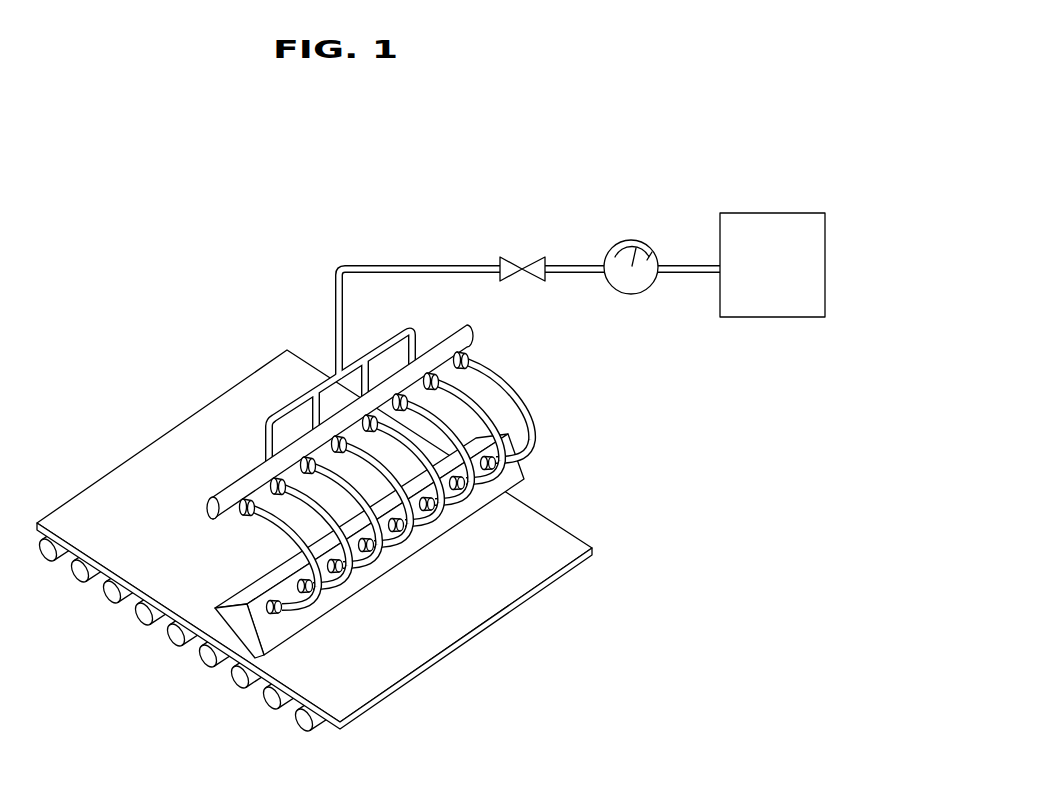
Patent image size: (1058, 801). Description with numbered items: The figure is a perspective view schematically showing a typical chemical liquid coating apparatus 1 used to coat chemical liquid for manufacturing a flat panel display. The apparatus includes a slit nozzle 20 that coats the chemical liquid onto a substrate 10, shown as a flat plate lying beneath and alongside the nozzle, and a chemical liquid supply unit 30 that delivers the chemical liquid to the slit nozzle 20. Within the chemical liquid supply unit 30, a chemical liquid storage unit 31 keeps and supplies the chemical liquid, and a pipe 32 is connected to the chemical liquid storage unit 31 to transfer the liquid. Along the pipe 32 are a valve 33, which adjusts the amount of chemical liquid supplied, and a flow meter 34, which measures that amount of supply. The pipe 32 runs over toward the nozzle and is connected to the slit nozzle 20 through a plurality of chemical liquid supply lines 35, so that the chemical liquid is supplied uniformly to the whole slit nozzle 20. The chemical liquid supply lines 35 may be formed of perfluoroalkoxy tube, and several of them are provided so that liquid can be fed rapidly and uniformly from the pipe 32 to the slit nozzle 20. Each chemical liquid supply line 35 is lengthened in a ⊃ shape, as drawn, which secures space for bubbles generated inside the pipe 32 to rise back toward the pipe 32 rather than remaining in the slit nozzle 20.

The chemical liquid coating apparatus 1 is at (190, 288).
The substrate 10 is at (538, 567).
The slit nozzle 20 is at (415, 433).
The chemical liquid supply unit 30 is at (707, 213).
The chemical liquid storage unit 31 is at (827, 200).
The pipe 32 is at (447, 262).
The valve 33 is at (528, 262).
The flow meter 34 is at (652, 256).
The chemical liquid supply lines 35 is at (538, 433).